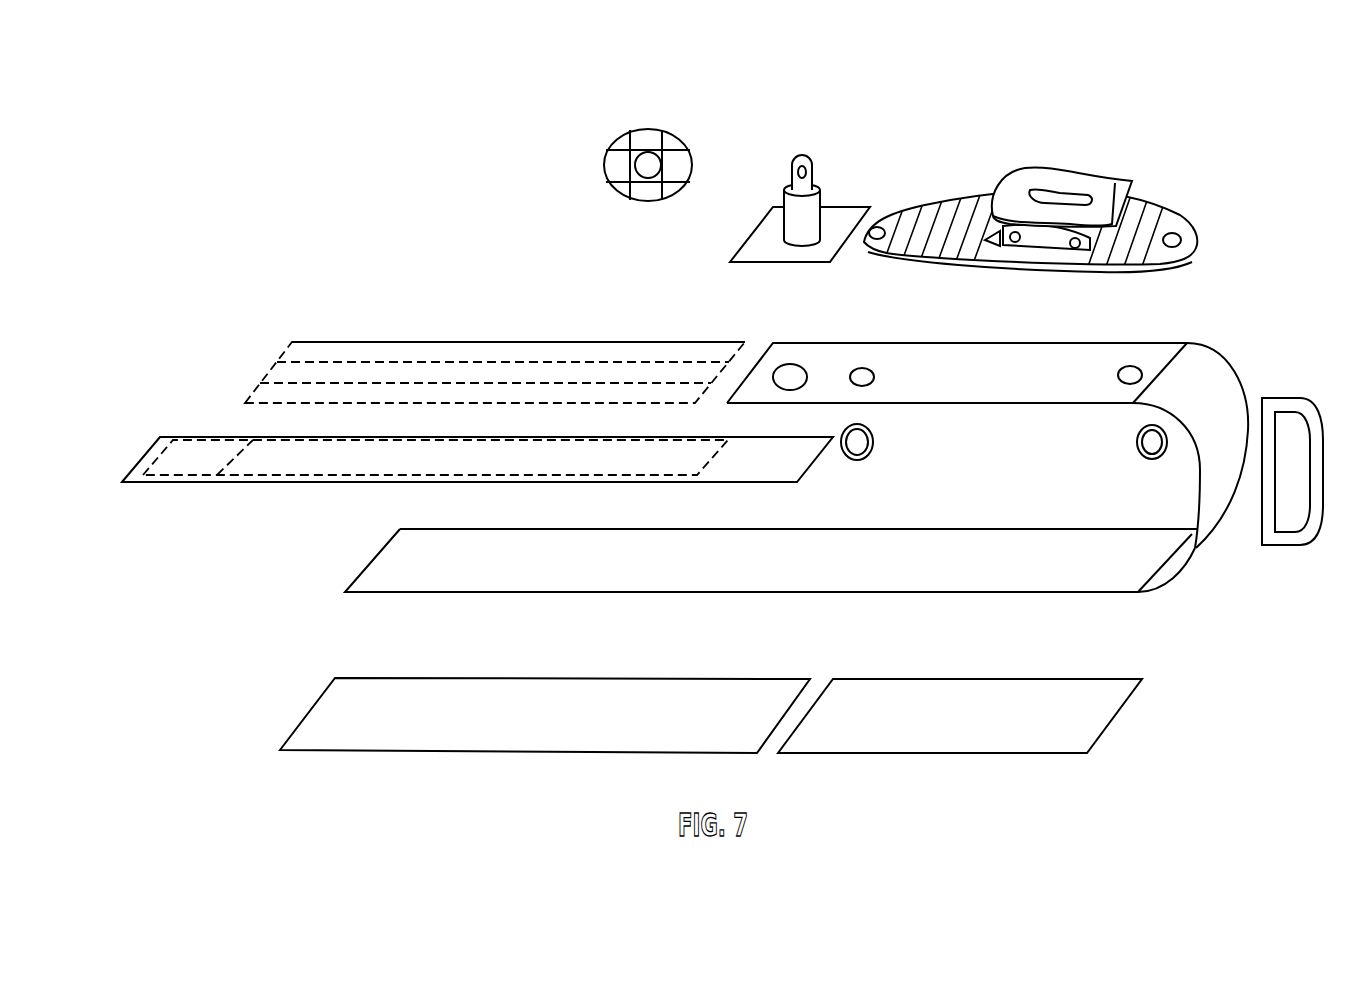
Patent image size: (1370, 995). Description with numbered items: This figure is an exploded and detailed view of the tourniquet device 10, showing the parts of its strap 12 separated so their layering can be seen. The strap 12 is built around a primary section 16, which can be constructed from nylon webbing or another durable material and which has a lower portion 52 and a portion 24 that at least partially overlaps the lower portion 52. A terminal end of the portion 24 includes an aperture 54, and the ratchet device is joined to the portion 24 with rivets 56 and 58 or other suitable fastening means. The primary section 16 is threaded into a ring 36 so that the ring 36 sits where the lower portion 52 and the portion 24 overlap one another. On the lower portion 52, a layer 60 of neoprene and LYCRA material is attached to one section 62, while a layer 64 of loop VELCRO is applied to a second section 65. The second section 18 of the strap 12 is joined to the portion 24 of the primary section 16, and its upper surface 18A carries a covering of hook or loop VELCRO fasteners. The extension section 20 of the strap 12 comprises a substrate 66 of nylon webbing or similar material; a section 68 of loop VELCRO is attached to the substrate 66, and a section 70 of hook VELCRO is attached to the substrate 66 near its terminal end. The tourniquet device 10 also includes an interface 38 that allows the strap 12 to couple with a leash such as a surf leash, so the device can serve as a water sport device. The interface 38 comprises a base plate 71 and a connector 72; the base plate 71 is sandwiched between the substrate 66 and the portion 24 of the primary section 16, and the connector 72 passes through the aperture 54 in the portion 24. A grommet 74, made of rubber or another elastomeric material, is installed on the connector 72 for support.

The tourniquet device 10 is at (304, 98).
The strap 12 is at (408, 318).
The primary section 16 is at (1216, 166).
The second section 18 is at (532, 343).
The upper surface 18A is at (452, 387).
The extension section 20 is at (251, 497).
The portion 24 is at (988, 428).
The ring 36 is at (1289, 405).
The interface 38 is at (867, 168).
The lower portion 52 is at (1078, 603).
The aperture 54 is at (789, 365).
The rivet 56 is at (870, 455).
The rivet 58 is at (1150, 462).
The layer 60 is at (515, 702).
The section 62 is at (567, 545).
The layer 64 is at (950, 702).
The second section 65 is at (997, 543).
The substrate 66 is at (718, 483).
The section of loop VELCRO 68 is at (620, 456).
The section of hook VELCRO 70 is at (191, 450).
The base plate 71 is at (752, 258).
The connector 72 is at (784, 196).
The grommet 74 is at (606, 165).